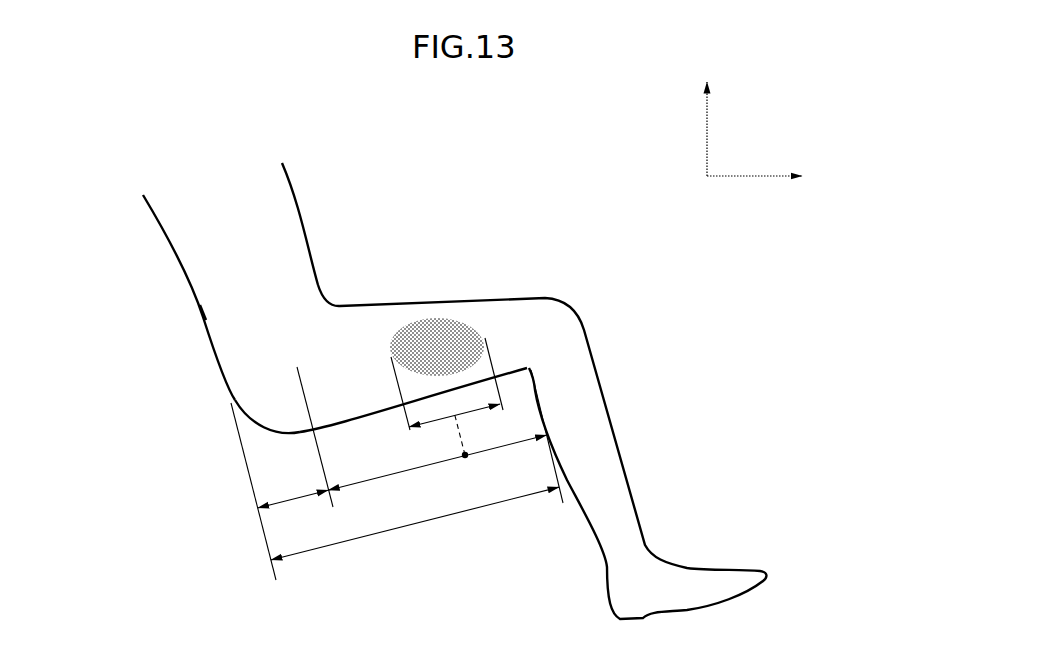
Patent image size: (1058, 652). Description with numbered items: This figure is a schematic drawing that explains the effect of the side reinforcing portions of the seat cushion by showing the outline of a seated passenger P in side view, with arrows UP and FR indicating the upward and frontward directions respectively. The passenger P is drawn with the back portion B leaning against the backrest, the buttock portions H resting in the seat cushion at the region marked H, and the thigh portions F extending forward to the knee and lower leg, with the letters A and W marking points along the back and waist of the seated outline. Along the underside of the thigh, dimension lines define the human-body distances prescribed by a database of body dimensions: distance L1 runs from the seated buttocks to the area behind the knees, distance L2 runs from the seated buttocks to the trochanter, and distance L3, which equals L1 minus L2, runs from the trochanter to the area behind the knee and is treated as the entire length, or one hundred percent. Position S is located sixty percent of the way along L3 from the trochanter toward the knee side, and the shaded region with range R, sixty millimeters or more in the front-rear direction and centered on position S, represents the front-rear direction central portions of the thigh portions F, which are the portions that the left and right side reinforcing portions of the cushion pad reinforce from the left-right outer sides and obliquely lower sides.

The seat back upper portion line A is at (285, 221).
The waist position W is at (285, 304).
The back portion B is at (175, 250).
The passenger P is at (201, 313).
The buttock portions H is at (242, 384).
The thigh portions F is at (445, 310).
The range R is at (432, 424).
The position S is at (468, 458).
The distance between the seated buttocks and the area behind the knees L1 is at (430, 520).
The distance between the seated buttocks and the trochanter L2 is at (311, 494).
The distance between the trochanter and the area behind the knee L3 is at (423, 466).
The upward direction UP is at (709, 110).
The frontward direction FR is at (783, 174).